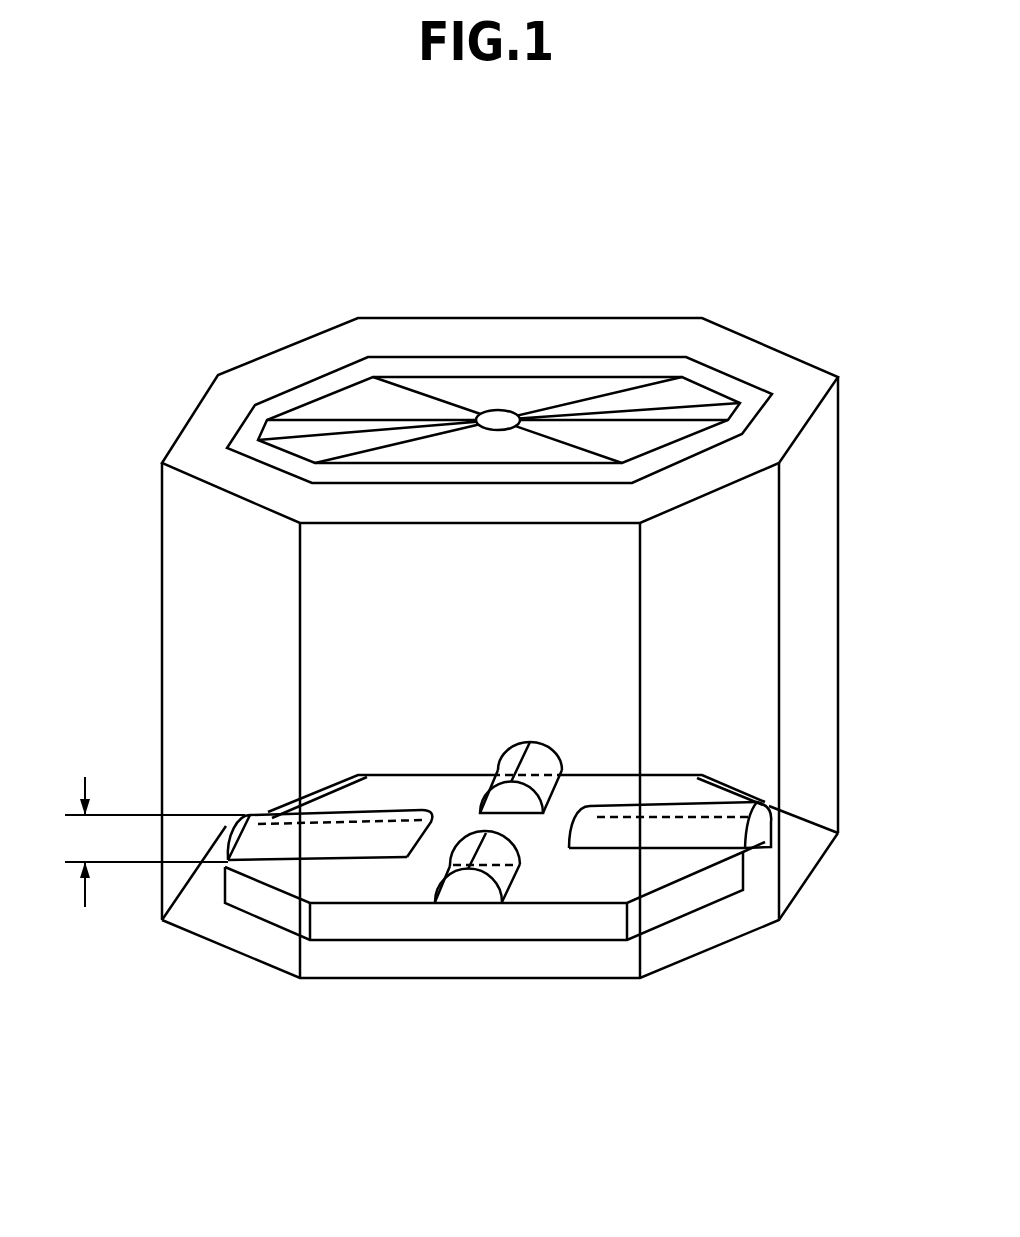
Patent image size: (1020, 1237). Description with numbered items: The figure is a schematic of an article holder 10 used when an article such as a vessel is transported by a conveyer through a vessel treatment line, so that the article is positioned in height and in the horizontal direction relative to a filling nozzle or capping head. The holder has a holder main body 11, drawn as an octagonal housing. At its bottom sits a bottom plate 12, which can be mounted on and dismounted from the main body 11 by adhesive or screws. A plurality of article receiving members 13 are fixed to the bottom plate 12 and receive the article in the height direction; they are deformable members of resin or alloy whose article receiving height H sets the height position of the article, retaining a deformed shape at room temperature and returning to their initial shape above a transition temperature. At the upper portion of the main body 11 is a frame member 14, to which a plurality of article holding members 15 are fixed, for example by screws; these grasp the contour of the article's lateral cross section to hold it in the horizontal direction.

The article holder 10 is at (205, 320).
The holder main body 11 is at (158, 585).
The bottom plate 12 is at (373, 925).
The article receiving members 13 is at (262, 828).
The frame member 14 is at (512, 427).
The article holding members 15 is at (358, 398).